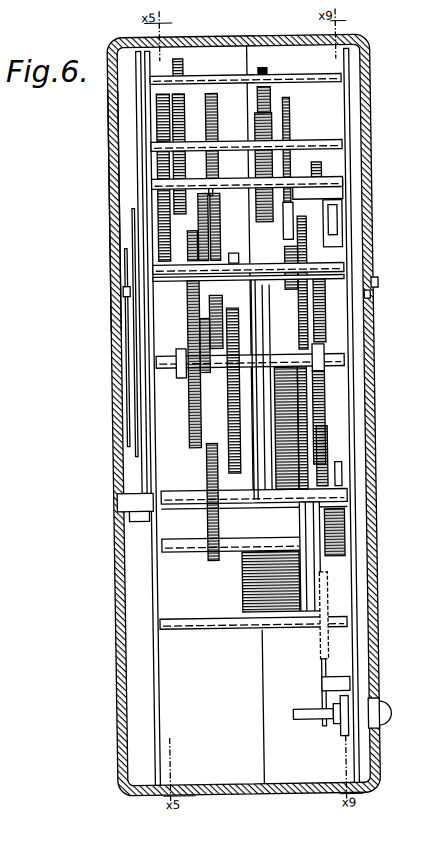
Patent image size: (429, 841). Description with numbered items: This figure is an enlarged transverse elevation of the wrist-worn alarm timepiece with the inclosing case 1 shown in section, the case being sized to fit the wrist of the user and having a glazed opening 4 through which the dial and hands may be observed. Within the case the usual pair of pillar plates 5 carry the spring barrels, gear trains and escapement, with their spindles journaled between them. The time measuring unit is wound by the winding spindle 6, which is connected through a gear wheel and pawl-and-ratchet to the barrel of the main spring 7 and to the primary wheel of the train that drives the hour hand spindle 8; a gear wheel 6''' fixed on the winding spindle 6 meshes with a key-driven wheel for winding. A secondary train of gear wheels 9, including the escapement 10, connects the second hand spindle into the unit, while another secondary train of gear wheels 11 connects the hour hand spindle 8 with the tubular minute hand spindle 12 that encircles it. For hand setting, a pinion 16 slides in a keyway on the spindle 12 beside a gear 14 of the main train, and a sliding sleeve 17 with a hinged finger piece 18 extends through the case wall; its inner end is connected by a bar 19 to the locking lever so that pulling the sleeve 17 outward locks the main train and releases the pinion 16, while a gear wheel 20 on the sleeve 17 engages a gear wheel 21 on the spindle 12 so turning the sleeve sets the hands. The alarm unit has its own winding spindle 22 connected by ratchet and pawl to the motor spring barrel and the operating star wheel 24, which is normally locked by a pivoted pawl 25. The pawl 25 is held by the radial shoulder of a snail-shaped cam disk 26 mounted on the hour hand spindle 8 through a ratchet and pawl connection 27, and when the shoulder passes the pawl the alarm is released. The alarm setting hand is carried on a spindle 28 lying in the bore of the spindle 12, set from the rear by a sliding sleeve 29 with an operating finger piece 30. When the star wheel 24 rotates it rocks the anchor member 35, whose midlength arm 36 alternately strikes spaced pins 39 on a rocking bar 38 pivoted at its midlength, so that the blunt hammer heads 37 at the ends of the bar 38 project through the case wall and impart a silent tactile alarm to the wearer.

The inclosing case 1 is at (375, 142).
The glazed opening 4 is at (112, 141).
The pillar plates 5 is at (352, 421).
The winding spindle 6 is at (250, 376).
The gear wheel 6''' is at (296, 351).
The main spring 7 is at (308, 397).
The hour hand spindle 8 is at (132, 282).
The secondary train of gear wheels 9 is at (277, 98).
The escapement 10 is at (295, 118).
The secondary train of gear wheels 11 is at (213, 218).
The minute hand spindle 12 is at (186, 292).
The gear 14 is at (273, 408).
The pinion 16 is at (236, 253).
The sliding sleeve 17 is at (247, 512).
The hinged finger piece 18 is at (116, 520).
The bar 19 is at (229, 433).
The gear wheel 20 is at (206, 473).
The gear wheel 21 is at (189, 430).
The winding spindle 22 is at (199, 553).
The star wheel 24 is at (344, 528).
The pivoted pawl 25 is at (326, 435).
The cam disk 26 is at (326, 350).
The ratchet and pawl connection 27 is at (344, 312).
The carrying spindle 28 is at (125, 291).
The sleeve 29 is at (378, 287).
The operating finger piece 30 is at (371, 300).
The rocking anchor member 35 is at (318, 660).
The arm 36 is at (318, 727).
The blunt hammer heads 37 is at (384, 707).
The rocking bar 38 is at (342, 732).
The pins 39 is at (294, 711).